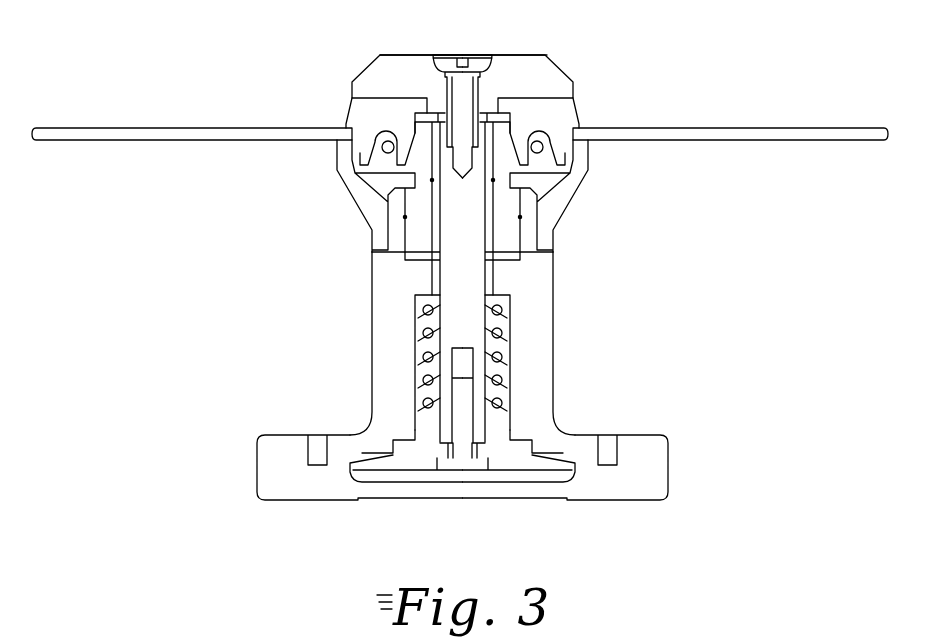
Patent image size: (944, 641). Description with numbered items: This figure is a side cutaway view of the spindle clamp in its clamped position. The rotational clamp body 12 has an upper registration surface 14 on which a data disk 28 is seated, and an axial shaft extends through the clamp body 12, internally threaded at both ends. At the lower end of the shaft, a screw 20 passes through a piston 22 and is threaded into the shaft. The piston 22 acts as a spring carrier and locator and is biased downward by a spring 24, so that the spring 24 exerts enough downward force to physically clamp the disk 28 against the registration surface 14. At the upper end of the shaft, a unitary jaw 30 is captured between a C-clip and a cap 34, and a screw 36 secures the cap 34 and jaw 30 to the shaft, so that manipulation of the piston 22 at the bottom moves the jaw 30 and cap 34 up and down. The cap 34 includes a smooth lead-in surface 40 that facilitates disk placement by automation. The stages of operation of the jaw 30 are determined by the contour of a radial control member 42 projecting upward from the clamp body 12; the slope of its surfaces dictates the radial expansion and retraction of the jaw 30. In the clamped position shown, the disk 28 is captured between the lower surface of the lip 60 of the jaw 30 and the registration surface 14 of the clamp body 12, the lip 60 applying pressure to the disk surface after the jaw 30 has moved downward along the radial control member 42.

The clamp body 12 is at (556, 270).
The upper registration surface 14 is at (588, 150).
The screw 20 is at (466, 389).
The piston 22 is at (505, 428).
The spring 24 is at (500, 353).
The disk 28 is at (787, 127).
The unitary jaw 30 is at (578, 104).
The cap 34 is at (527, 57).
The screw 36 is at (471, 56).
The smooth lead-in surface 40 is at (561, 68).
The radial control member 42 is at (421, 251).
The lip 60 is at (582, 124).